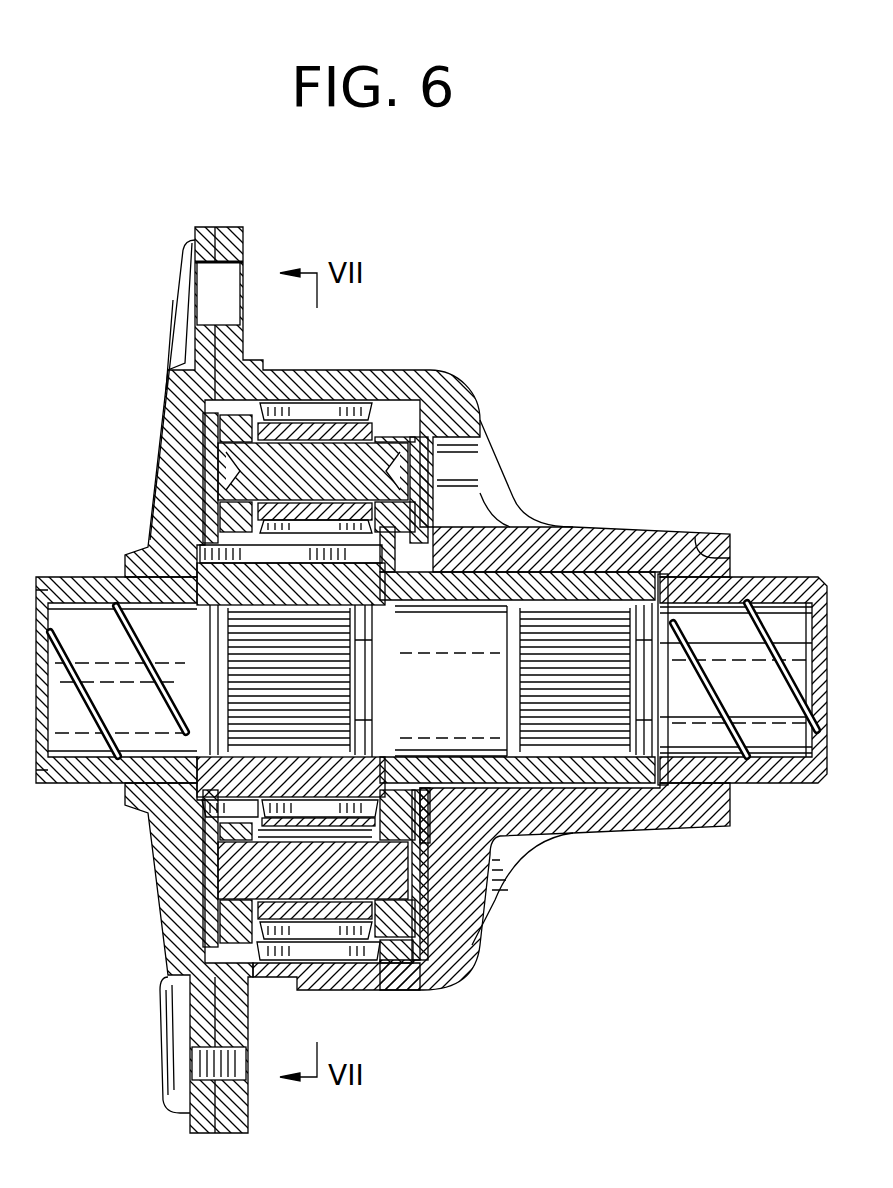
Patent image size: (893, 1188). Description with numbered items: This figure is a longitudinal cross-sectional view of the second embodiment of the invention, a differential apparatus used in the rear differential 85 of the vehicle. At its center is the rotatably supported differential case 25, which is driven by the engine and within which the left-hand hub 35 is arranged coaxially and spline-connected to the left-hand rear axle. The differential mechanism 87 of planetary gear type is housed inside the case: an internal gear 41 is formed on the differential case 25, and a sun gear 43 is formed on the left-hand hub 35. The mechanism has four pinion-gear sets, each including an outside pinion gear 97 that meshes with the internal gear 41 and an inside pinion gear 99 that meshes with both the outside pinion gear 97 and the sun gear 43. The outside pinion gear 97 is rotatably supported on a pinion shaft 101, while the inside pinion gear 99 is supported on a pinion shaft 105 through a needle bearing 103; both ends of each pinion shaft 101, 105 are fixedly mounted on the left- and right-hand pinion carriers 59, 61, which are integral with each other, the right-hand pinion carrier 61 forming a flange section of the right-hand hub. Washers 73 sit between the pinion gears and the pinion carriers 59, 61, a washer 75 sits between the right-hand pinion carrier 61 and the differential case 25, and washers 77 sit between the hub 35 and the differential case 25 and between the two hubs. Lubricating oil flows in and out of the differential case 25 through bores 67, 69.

The differential case 25 is at (215, 227).
The left-hand hub 35 is at (365, 540).
The internal gear 41 is at (372, 952).
The sun gear 43 is at (262, 548).
The left-hand pinion carrier 59 is at (228, 513).
The right-hand pinion carrier 61 is at (409, 558).
The bore 67 is at (160, 467).
The bore 69 is at (490, 495).
The washer 73 is at (262, 410).
The washer 75 is at (447, 560).
The washer 77 is at (173, 747).
The rear differential 85 is at (567, 347).
The differential mechanism 87 is at (452, 343).
The outside pinion gear 97 is at (300, 540).
The inside pinion gear 99 is at (305, 930).
The pinion shaft 101 is at (330, 484).
The needle bearing 103 is at (330, 945).
The pinion shaft 105 is at (334, 884).